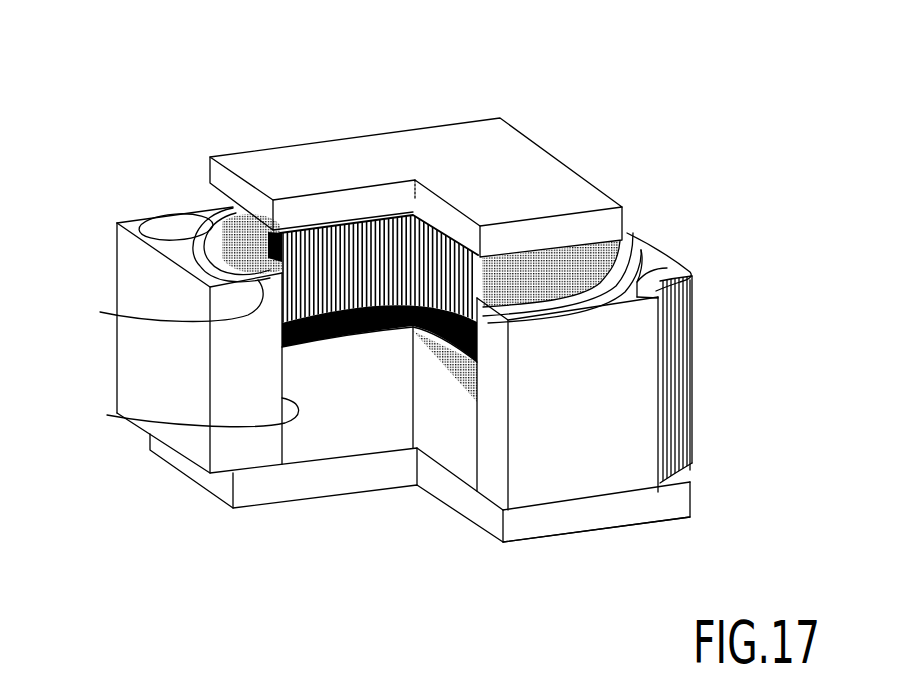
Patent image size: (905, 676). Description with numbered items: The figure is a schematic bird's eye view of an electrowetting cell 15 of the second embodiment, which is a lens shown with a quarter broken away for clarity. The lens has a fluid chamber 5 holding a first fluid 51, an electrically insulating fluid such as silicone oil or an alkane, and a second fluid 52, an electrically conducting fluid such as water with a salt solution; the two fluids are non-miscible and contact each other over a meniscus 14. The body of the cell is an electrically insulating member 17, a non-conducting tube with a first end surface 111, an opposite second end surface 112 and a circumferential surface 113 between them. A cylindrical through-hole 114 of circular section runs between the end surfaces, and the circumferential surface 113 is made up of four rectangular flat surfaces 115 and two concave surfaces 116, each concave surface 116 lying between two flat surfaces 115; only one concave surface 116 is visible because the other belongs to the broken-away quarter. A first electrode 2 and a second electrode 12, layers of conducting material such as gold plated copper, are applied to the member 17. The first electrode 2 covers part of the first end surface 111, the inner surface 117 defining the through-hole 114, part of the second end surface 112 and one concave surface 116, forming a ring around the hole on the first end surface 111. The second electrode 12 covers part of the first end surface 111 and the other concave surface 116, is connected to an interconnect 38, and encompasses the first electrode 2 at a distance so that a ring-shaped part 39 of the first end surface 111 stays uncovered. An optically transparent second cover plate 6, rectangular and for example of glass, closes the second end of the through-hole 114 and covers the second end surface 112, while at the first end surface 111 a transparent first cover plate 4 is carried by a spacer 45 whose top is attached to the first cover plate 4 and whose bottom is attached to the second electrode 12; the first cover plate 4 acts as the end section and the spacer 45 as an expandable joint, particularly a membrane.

The electrowetting cell 15 is at (238, 98).
The first electrode 2 is at (240, 215).
The first cover plate 4 is at (465, 140).
The fluid chamber 5 is at (428, 417).
The second cover plate 6 is at (538, 520).
The second electrode 12 is at (625, 250).
The meniscus 14 is at (407, 290).
The electrically insulating member 17 is at (615, 398).
The interconnect 38 is at (180, 222).
The part of the first end surface 39 is at (100, 312).
The spacer 45 is at (575, 245).
The first fluid 51 is at (338, 397).
The second fluid 52 is at (373, 287).
The first end surface 111 is at (650, 262).
The second end surface 112 is at (597, 493).
The circumferential surface 113 is at (633, 435).
The through-hole 114 is at (373, 377).
The flat surface 115 is at (613, 455).
The concave surface 116 is at (700, 348).
The inner surface 117 is at (110, 415).